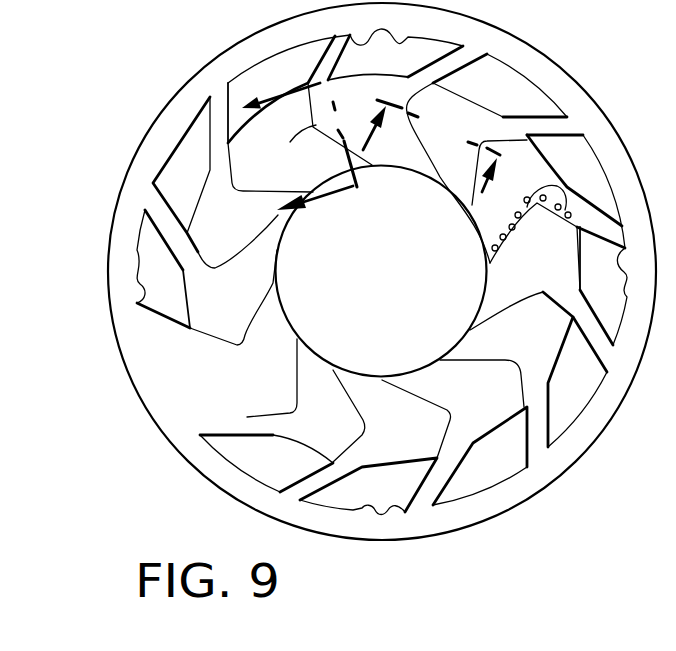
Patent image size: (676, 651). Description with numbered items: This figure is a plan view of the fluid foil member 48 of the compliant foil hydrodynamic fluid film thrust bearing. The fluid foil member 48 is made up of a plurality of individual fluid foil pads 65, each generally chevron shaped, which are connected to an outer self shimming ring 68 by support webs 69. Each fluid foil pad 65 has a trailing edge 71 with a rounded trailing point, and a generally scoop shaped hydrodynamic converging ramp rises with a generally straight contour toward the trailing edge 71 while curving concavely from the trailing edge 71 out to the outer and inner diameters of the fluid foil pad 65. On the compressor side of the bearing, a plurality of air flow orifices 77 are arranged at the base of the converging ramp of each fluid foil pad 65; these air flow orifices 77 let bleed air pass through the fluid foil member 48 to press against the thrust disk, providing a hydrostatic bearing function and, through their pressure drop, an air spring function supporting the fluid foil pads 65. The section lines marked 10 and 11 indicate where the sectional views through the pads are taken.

The fluid foil member 48 is at (128, 84).
The outer self shimming ring 68 is at (127, 231).
The support web 69 is at (170, 352).
The fluid foil pad 65 is at (477, 124).
The trailing edge 71 is at (293, 148).
The air flow orifice 77 is at (567, 183).
The section line 10- 10 is at (297, 145).
The section line 11- 11 is at (434, 143).